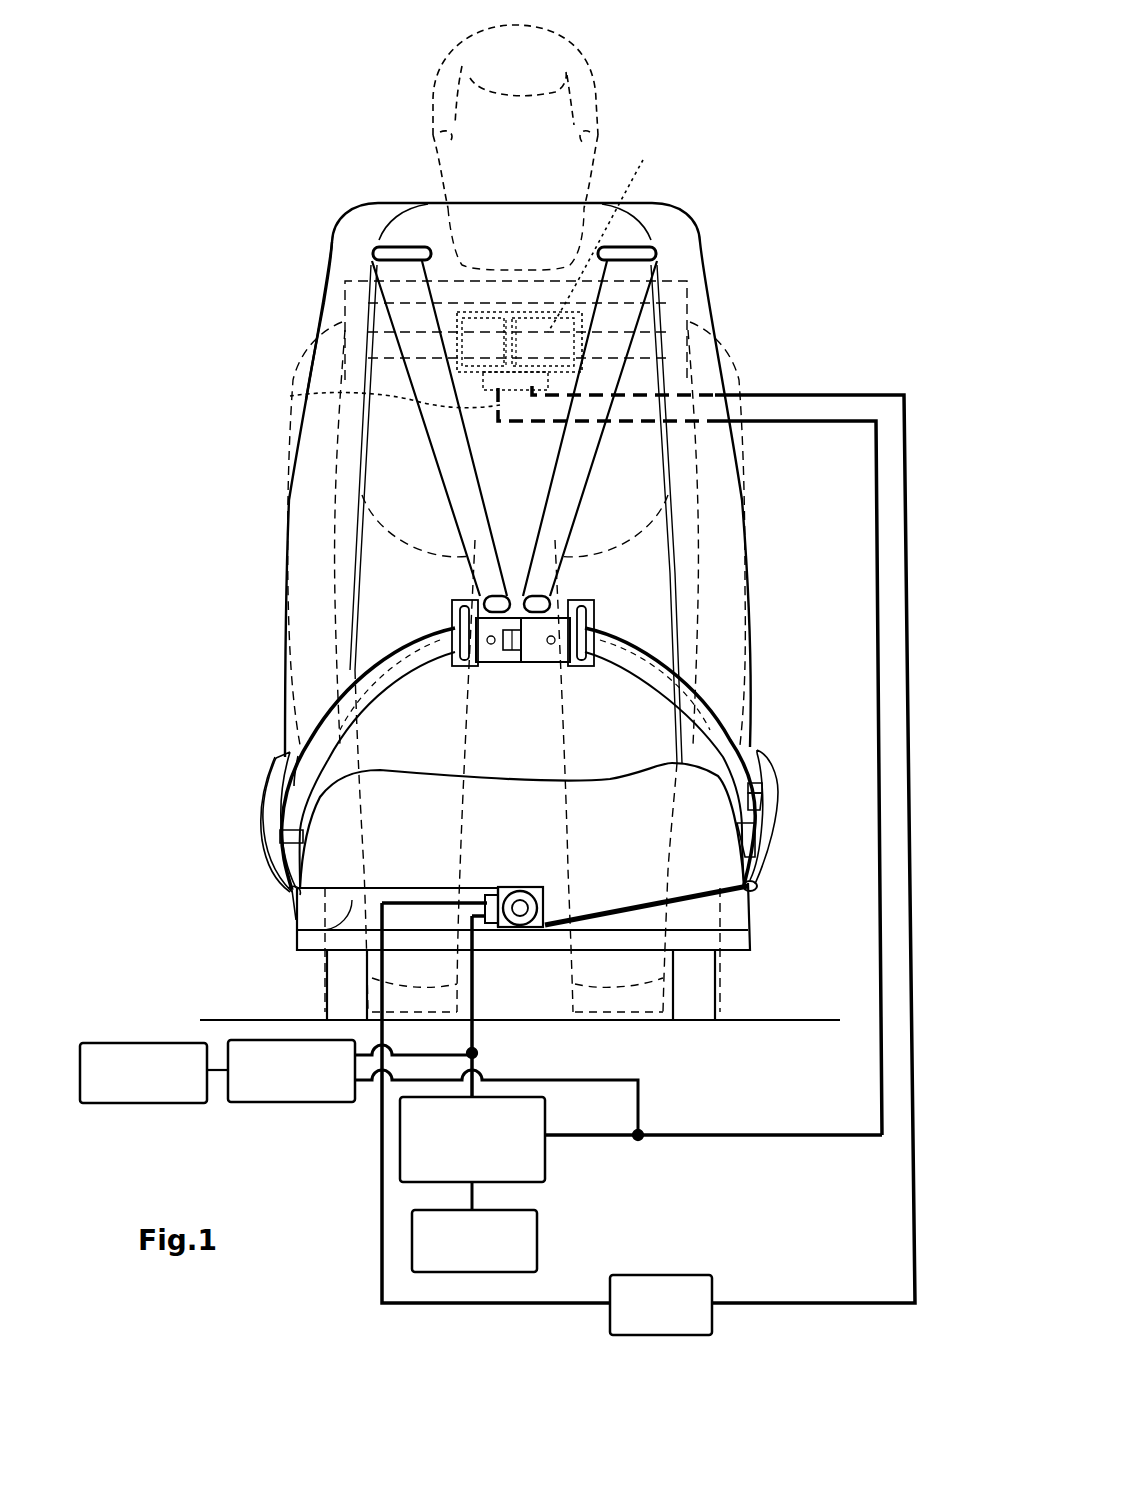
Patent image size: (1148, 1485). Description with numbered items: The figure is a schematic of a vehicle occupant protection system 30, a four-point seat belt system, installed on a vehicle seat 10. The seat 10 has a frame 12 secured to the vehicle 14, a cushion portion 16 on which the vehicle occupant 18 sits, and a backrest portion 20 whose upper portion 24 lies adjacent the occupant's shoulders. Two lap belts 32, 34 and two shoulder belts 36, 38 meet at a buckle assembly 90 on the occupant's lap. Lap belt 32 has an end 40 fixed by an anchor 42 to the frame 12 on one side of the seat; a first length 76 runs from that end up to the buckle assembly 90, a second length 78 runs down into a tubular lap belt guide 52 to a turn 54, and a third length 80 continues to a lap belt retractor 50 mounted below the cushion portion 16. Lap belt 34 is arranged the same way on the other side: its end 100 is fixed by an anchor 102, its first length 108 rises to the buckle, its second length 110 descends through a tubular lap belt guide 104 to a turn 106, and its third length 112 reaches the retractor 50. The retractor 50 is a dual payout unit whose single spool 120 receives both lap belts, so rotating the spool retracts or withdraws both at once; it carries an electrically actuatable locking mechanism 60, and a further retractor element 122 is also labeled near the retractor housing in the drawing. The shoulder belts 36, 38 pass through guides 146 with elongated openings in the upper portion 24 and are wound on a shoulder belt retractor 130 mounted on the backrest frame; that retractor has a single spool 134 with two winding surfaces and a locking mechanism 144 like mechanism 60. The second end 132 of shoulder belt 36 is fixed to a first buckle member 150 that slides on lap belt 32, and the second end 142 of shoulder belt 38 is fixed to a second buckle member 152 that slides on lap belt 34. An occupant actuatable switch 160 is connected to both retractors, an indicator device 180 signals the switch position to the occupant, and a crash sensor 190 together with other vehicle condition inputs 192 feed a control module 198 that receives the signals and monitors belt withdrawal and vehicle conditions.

The vehicle seat 10 is at (328, 253).
The frame 12 is at (342, 322).
The vehicle 14 is at (748, 1022).
The cushion portion 16 is at (520, 780).
The vehicle occupant 18 is at (600, 70).
The backrest portion 20 is at (680, 218).
The upper portion 24 is at (328, 302).
The vehicle occupant protection system 30 is at (820, 360).
The lap belt 32 is at (692, 678).
The lap belt 34 is at (325, 705).
The shoulder belt 36 is at (580, 470).
The shoulder belt 38 is at (448, 458).
The end 40 is at (766, 795).
The anchor 42 is at (745, 838).
The lap belt retractor 50 is at (546, 888).
The tubular lap belt guide 52 is at (776, 750).
The turn 54 is at (763, 890).
The electrically actuatable locking mechanism 60 is at (494, 924).
The first length 76 is at (772, 778).
The second length 78 is at (660, 665).
The third length 80 is at (702, 892).
The buckle assembly 90 is at (477, 600).
The end 100 is at (282, 790).
The anchor 102 is at (285, 836).
The tubular lap belt guide 104 is at (262, 835).
The turn 106 is at (285, 910).
The first length 108 is at (300, 762).
The second length 110 is at (407, 660).
The third length 112 is at (352, 900).
The spool 120 is at (500, 885).
The retractor mount 122 is at (540, 928).
The shoulder belt retractor 130 is at (582, 342).
The second end 132 is at (553, 600).
The spool 134 is at (609, 234).
The second end 142 is at (498, 596).
The electrically actuatable locking mechanism 144 is at (292, 399).
The guide 146 is at (400, 244).
The first buckle member 150 is at (546, 662).
The second buckle member 152 is at (498, 662).
The occupant actuatable switch 160 is at (545, 1162).
The indicator device 180 is at (537, 1250).
The crash sensor 190 is at (668, 1273).
The vehicle condition inputs 192 is at (140, 1105).
The control module 198 is at (298, 1104).